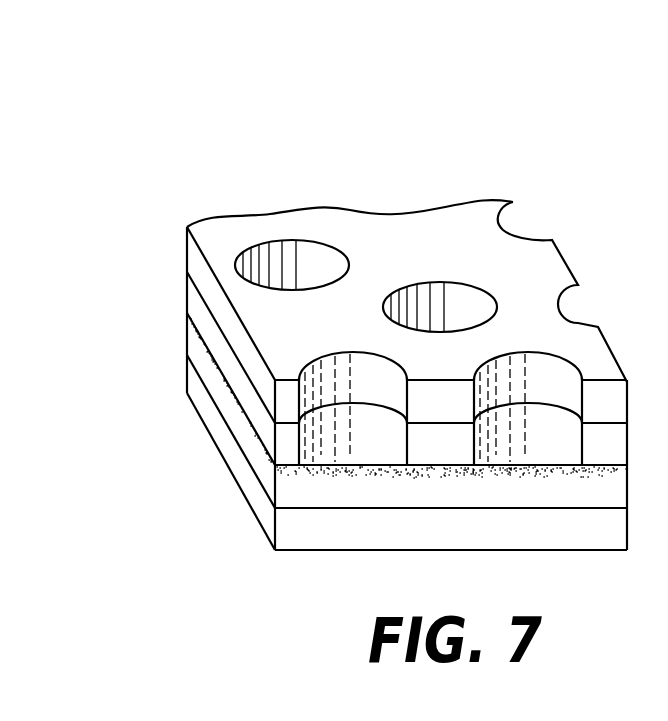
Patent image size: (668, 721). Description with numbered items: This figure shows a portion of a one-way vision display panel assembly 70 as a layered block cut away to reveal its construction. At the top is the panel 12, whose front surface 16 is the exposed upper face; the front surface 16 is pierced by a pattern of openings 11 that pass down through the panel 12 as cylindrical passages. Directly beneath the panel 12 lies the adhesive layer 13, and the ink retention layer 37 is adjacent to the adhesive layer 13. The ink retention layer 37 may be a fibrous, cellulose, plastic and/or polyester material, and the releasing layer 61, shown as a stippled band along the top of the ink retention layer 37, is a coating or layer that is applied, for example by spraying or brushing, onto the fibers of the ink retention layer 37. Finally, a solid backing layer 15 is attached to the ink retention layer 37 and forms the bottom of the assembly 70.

The one-way vision display panel assembly 70 is at (583, 130).
The holes 11 is at (304, 244).
The panel 12 is at (190, 252).
The adhesive layer 13 is at (190, 290).
The ink retention layer 37 is at (190, 337).
The solid backing layer 15 is at (190, 382).
The front surface 16 is at (546, 271).
The releasing layer 61 is at (240, 410).